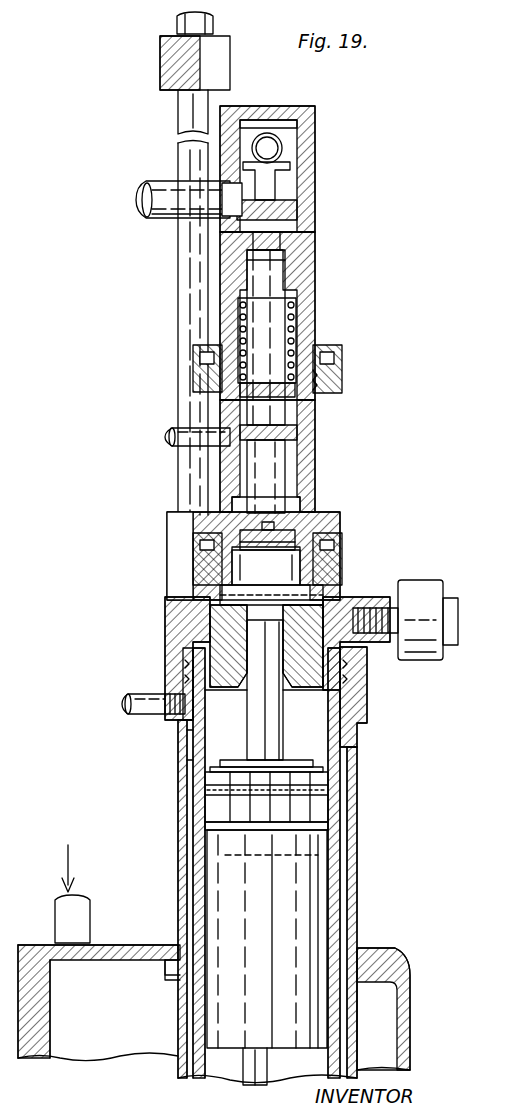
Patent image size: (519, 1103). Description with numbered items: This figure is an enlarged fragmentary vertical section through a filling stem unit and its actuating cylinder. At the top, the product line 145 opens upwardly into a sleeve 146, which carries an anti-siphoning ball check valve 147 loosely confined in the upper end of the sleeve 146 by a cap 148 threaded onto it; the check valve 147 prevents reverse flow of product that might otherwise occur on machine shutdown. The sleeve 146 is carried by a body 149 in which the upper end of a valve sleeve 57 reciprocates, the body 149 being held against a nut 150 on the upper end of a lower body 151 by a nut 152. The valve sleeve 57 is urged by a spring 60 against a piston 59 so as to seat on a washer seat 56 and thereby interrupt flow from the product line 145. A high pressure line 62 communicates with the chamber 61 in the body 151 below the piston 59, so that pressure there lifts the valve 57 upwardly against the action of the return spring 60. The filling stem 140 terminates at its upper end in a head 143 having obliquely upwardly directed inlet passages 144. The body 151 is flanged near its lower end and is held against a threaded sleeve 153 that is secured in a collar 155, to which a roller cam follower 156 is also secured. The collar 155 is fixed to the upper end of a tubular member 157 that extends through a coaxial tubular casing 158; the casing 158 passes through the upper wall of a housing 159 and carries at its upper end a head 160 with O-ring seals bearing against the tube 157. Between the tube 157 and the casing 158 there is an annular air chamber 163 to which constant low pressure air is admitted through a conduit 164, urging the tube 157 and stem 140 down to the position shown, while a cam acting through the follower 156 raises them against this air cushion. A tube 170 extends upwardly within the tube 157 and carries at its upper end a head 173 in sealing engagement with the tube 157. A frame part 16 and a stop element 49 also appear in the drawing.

The frame 16 is at (12, 849).
The stop block 49 is at (55, 922).
The washer seat 56 is at (245, 515).
The valve sleeve 57 is at (275, 475).
The piston 59 is at (300, 413).
The spring 60 is at (297, 322).
The chamber 61 is at (240, 420).
The high pressure line 62 is at (175, 432).
The filling stem 140 is at (258, 732).
The head 143 is at (240, 572).
The inlet passages 144 is at (280, 532).
The product line 145 is at (150, 184).
The sleeve 146 is at (315, 165).
The anti-siphoning ball check valve 147 is at (280, 145).
The cap 148 is at (318, 108).
The body 149 is at (308, 270).
The nut 150 is at (340, 380).
The body 151 is at (312, 457).
The nut 152 is at (200, 352).
The threaded sleeve 153 is at (222, 592).
The collar 155 is at (182, 626).
The roller cam follower 156 is at (425, 592).
The tubular member 157 is at (340, 876).
The tubular casing 158 is at (355, 838).
The housing 159 is at (153, 946).
The head 160 is at (365, 690).
The annular air chamber 163 is at (185, 772).
The conduit 164 is at (140, 700).
The tube 170 is at (330, 930).
The head 173 is at (315, 806).